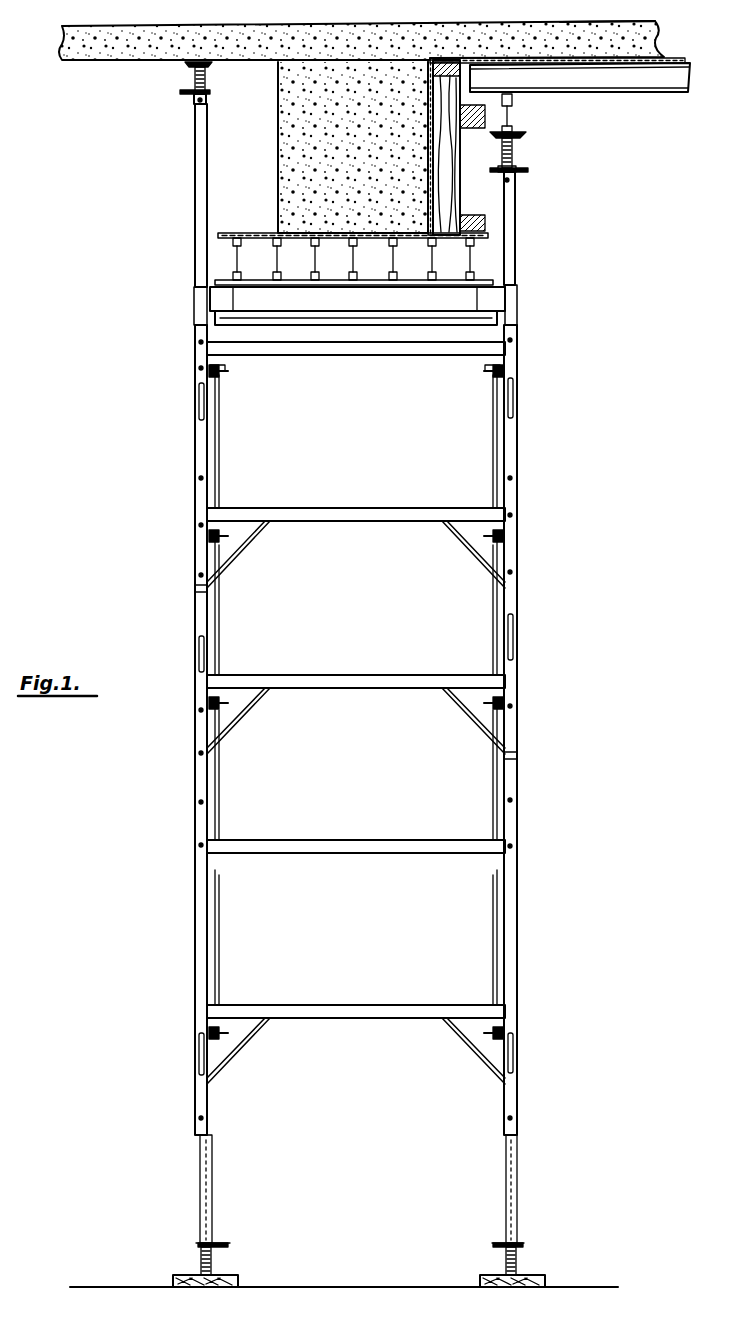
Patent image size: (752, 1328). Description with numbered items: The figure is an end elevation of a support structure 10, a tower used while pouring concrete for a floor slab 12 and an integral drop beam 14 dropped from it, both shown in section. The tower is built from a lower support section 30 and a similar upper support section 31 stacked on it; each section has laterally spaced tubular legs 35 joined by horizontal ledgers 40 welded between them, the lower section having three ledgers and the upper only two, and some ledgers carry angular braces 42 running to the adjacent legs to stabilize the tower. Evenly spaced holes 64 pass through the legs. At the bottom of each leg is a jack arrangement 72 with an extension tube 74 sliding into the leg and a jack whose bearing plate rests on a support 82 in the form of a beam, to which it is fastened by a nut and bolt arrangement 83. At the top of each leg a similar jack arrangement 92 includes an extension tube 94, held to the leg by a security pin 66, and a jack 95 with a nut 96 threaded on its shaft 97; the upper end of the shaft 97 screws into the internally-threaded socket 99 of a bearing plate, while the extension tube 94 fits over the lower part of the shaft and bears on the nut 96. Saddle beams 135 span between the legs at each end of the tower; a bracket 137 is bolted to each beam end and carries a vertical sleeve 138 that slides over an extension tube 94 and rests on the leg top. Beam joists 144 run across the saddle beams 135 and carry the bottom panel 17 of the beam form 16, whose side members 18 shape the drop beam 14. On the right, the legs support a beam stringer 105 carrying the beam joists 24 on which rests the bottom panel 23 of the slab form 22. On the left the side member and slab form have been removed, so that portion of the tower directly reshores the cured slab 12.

The support structure 10 is at (158, 527).
The floor slab 12 is at (236, 32).
The drop beam 14 is at (286, 136).
The beam form 16 is at (450, 180).
The bottom panel 17 is at (404, 246).
The side members 18 is at (433, 148).
The slab form 22 is at (578, 56).
The bottom panel 23 is at (498, 56).
The beam joists 24 is at (612, 82).
The lower support section 30 is at (196, 824).
The upper support section 31 is at (196, 476).
The legs 35 is at (196, 930).
The horizontal ledgers 40 is at (402, 356).
The angular braces 42 is at (258, 540).
The holes 64 is at (196, 596).
The security pin 66 is at (514, 392).
The jack arrangement 72 is at (236, 1258).
The extension tube 74 is at (212, 1164).
The support 82 is at (240, 1278).
The nut and bolt arrangement 83 is at (200, 1274).
The jack arrangement 92 is at (186, 74).
The extension tube 94 is at (516, 232).
The jack 95 is at (514, 150).
The nut 96 is at (516, 172).
The shaft 97 is at (514, 158).
The internally-threaded socket 99 is at (516, 134).
The beam stringers 105 is at (508, 112).
The saddle beams 135 is at (326, 302).
The bracket 137 is at (232, 298).
The vertical sleeve 138 is at (196, 322).
The beam joists 144 is at (276, 262).